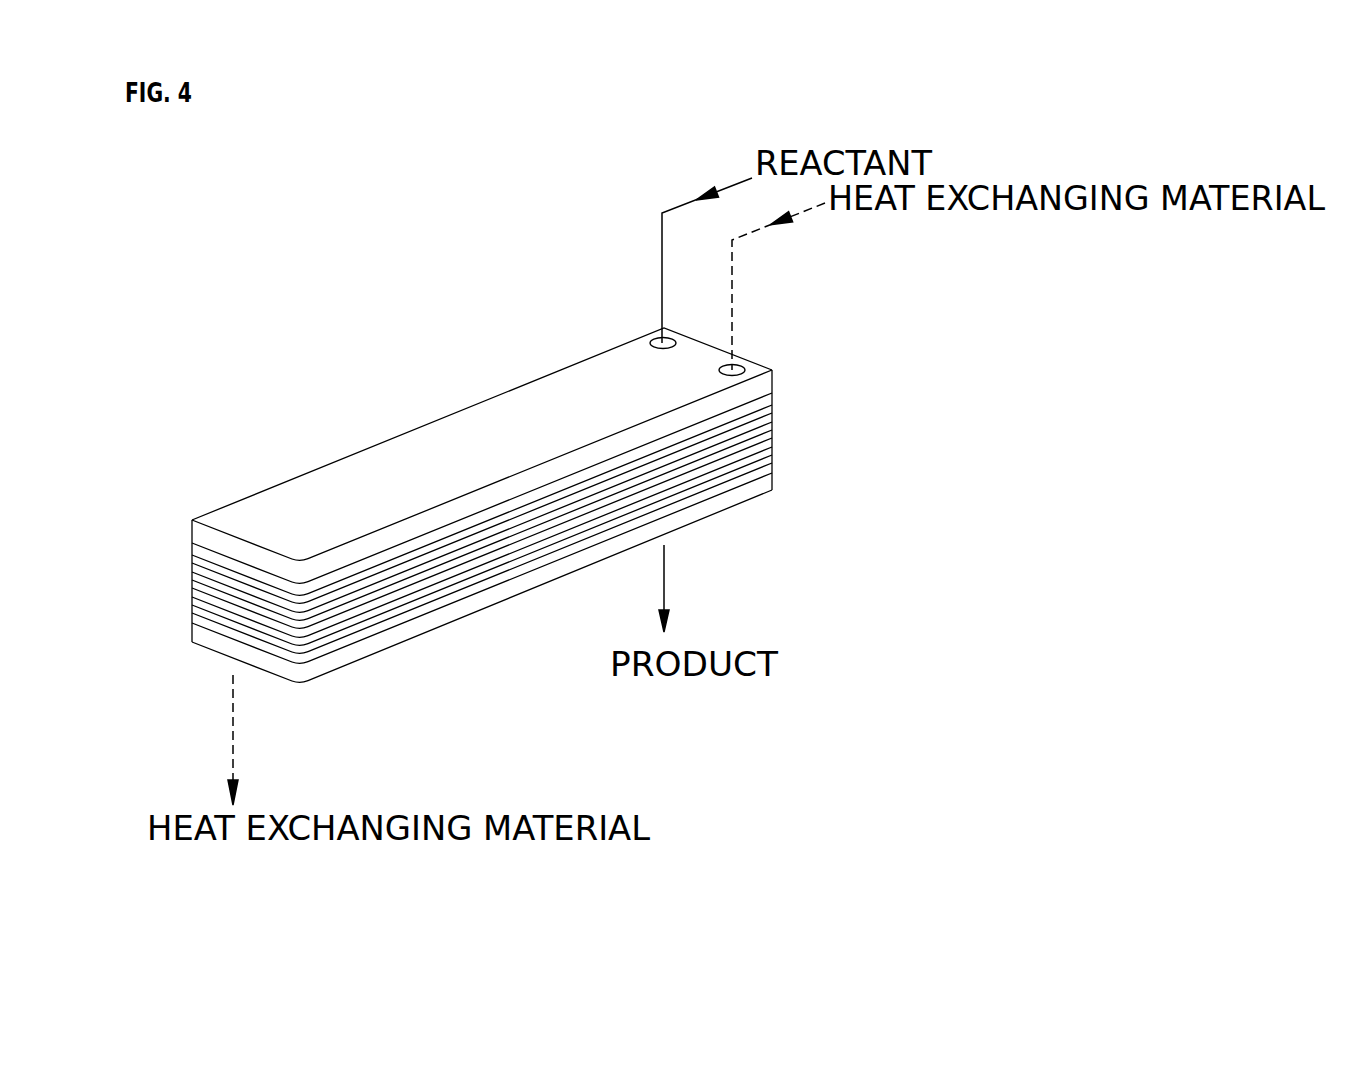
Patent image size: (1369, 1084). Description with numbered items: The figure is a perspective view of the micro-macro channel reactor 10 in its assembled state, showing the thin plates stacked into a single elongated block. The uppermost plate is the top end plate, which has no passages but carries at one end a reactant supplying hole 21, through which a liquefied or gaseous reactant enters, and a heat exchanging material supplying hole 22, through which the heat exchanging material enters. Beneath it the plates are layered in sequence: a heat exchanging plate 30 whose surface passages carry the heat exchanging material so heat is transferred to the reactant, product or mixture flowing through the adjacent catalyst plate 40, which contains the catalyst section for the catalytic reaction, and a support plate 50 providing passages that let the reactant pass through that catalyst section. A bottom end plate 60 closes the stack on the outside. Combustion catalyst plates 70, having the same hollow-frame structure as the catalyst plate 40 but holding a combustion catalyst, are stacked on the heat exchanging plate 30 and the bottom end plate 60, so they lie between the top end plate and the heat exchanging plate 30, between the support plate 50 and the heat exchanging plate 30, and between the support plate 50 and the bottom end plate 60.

The micro-macro channel reactor 10 is at (387, 417).
The reactant supplying hole 21 is at (658, 340).
The heat exchanging material supplying hole 22 is at (736, 367).
The heat exchanging plate 30 is at (777, 413).
The catalyst plate 40 is at (777, 420).
The support plate 50 is at (778, 435).
The bottom end plate 60 is at (465, 612).
The combustion catalyst plate 70 is at (777, 402).